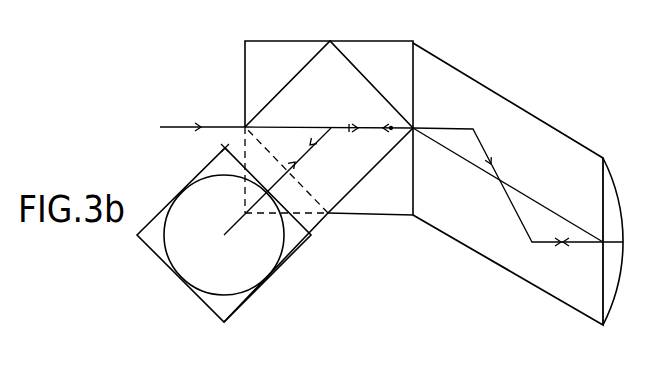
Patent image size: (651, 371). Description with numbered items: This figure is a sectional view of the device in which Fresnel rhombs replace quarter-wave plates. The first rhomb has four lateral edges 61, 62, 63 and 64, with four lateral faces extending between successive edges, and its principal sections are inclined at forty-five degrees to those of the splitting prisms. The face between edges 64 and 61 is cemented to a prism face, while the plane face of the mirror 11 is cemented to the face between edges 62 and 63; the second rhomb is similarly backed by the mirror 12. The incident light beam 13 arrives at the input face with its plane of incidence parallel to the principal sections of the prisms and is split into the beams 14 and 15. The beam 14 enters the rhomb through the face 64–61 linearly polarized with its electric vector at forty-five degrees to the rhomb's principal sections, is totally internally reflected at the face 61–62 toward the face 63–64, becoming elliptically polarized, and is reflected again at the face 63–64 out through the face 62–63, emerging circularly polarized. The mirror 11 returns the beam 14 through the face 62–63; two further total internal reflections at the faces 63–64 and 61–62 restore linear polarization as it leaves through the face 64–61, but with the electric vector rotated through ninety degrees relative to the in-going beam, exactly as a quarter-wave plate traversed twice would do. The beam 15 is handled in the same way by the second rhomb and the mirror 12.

The mirror 11 is at (283, 250).
The mirror 12 is at (610, 322).
The light beam 13 is at (202, 117).
The beam 14 is at (303, 157).
The beam 15 is at (445, 128).
The lateral edge 61 is at (343, 55).
The lateral edge 62 is at (307, 231).
The lateral edge 63 is at (152, 251).
The lateral edge 64 is at (221, 148).